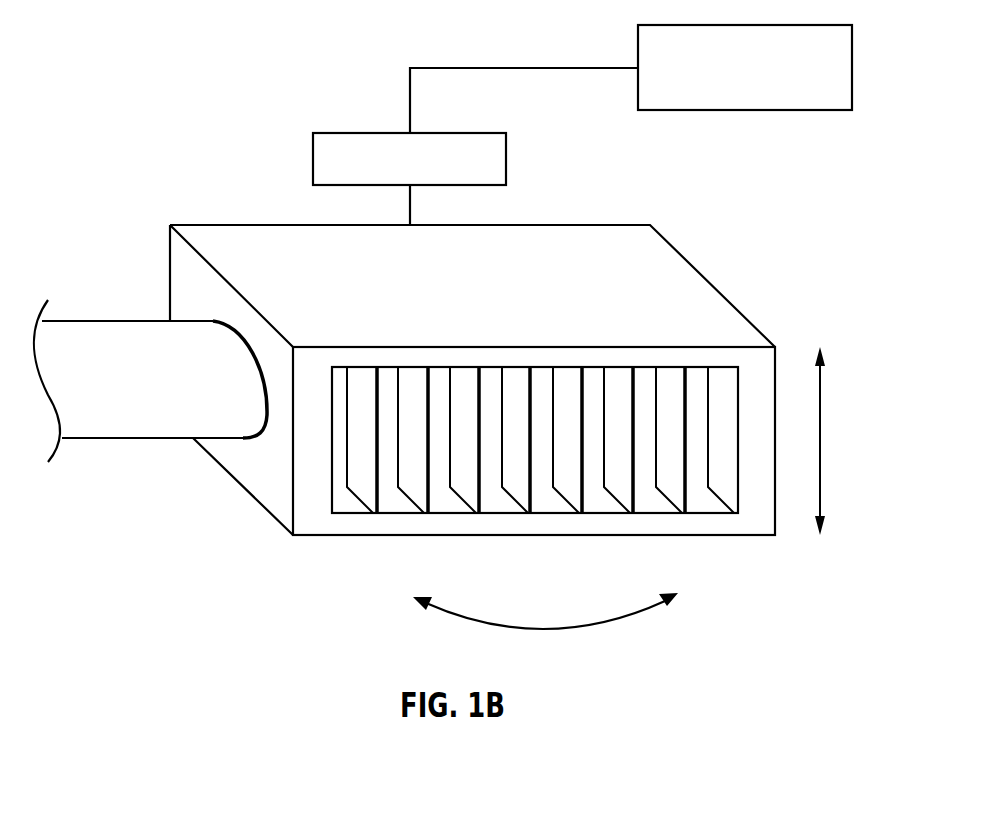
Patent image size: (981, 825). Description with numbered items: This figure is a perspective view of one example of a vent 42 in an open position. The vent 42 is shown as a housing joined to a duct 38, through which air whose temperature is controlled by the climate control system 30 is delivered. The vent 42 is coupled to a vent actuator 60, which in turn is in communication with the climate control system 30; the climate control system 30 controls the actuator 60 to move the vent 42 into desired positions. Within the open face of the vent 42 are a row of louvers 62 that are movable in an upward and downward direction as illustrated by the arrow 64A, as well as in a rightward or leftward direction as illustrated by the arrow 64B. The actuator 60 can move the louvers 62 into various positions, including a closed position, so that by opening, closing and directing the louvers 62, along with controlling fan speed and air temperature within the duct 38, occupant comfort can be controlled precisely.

The climate control system 30 is at (745, 110).
The duct 38 is at (115, 321).
The vent 42 is at (272, 567).
The vent actuator 60 is at (313, 157).
The louvers 62 is at (356, 480).
The arrow 64A is at (820, 440).
The arrow 64B is at (620, 617).